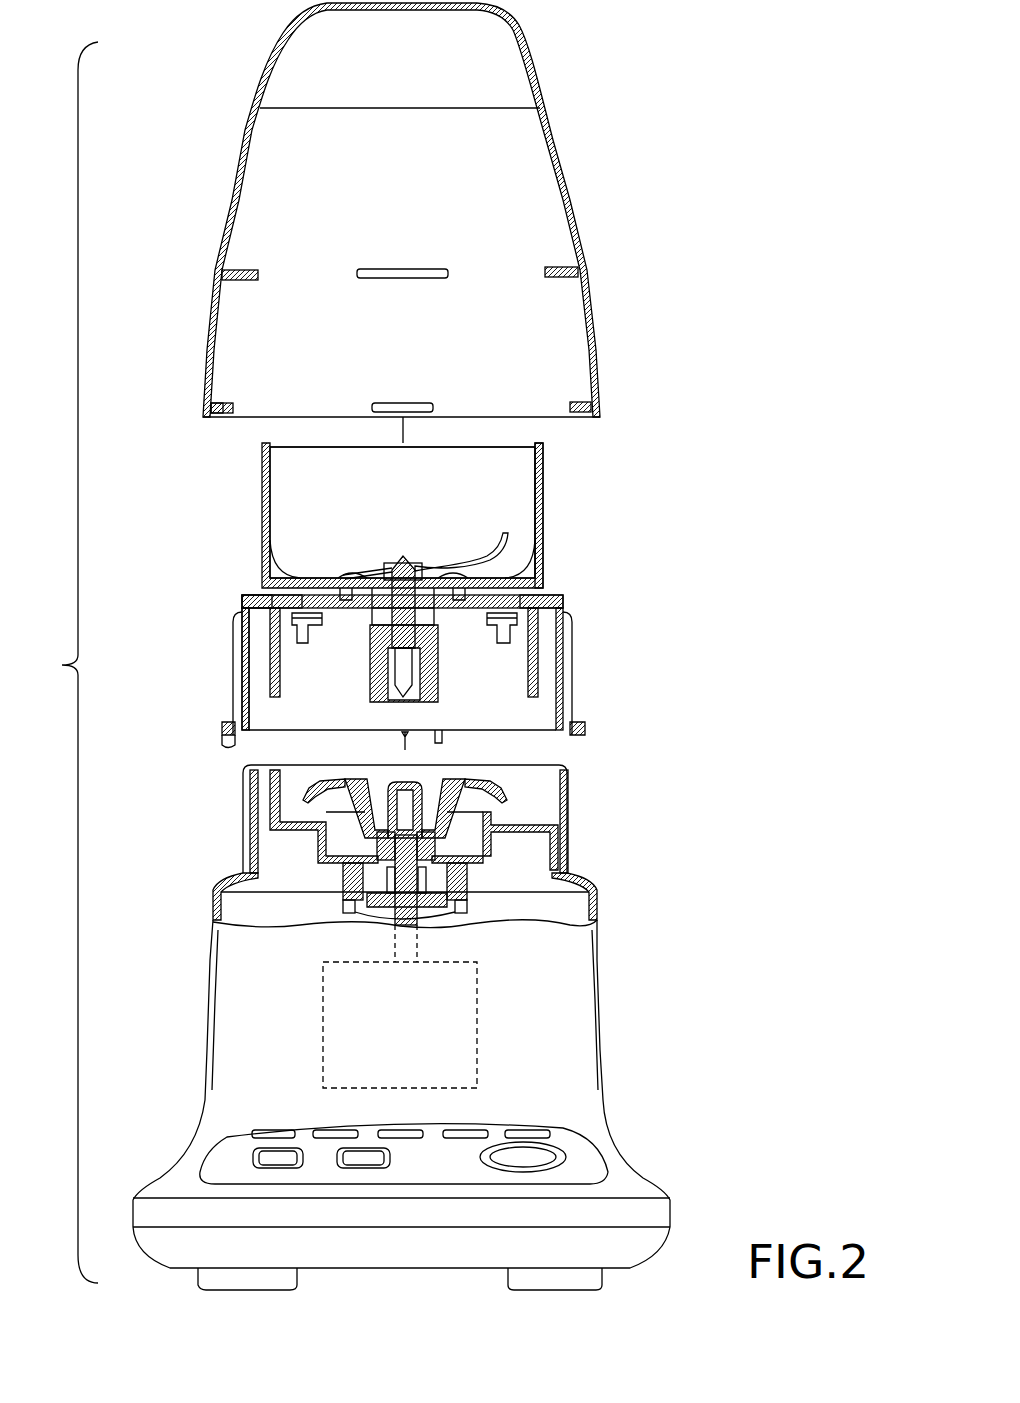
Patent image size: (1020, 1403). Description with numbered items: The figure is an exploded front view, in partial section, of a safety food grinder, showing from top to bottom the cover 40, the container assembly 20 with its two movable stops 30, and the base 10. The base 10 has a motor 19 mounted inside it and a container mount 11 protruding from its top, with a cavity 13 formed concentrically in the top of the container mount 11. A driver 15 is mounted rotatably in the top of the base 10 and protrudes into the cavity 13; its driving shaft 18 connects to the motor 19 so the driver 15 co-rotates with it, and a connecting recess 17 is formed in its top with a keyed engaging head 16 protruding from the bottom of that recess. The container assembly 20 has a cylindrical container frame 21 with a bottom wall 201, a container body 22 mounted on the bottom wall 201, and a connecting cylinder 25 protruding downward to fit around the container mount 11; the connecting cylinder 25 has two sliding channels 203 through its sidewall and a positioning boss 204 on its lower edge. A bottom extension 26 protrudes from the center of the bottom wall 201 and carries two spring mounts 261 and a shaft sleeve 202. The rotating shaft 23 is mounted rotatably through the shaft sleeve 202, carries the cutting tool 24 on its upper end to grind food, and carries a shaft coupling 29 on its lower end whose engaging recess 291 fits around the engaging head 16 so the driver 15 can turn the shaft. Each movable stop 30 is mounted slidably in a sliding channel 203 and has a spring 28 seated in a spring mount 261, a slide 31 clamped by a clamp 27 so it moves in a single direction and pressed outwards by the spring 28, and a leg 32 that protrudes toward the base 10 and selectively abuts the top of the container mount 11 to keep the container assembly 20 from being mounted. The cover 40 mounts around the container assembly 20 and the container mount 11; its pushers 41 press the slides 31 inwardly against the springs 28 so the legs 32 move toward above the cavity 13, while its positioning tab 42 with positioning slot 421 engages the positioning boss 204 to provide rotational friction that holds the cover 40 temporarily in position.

The base 10 is at (572, 1023).
The container mount 11 is at (249, 769).
The cavity 13 is at (290, 800).
The driver 15 is at (508, 800).
The engaging head 16 is at (423, 794).
The connecting recess 17 is at (380, 800).
The driving shaft 18 is at (414, 924).
The motor 19 is at (323, 1003).
The container assembly 20 is at (556, 509).
The container frame 21 is at (549, 473).
The container body 22 is at (302, 492).
The rotating shaft 23 is at (398, 560).
The cutting tool 24 is at (487, 548).
The connecting cylinder 25 is at (564, 660).
The bottom extension 26 is at (380, 578).
The clamp 27 is at (272, 640).
The spring 28 is at (340, 622).
The shaft coupling 29 is at (438, 650).
The movable stop 30 is at (238, 612).
The slide 31 is at (241, 603).
The leg 32 is at (262, 676).
The cover 40 is at (558, 204).
The pusher 41 is at (228, 270).
The positioning tab 42 is at (218, 415).
The bottom wall 201 is at (503, 576).
The shaft sleeve 202 is at (330, 577).
The sliding channel 203 is at (248, 597).
The positioning boss 204 is at (224, 733).
The spring mount 261 is at (562, 612).
The engaging recess 291 is at (408, 678).
The positioning slot 421 is at (226, 404).